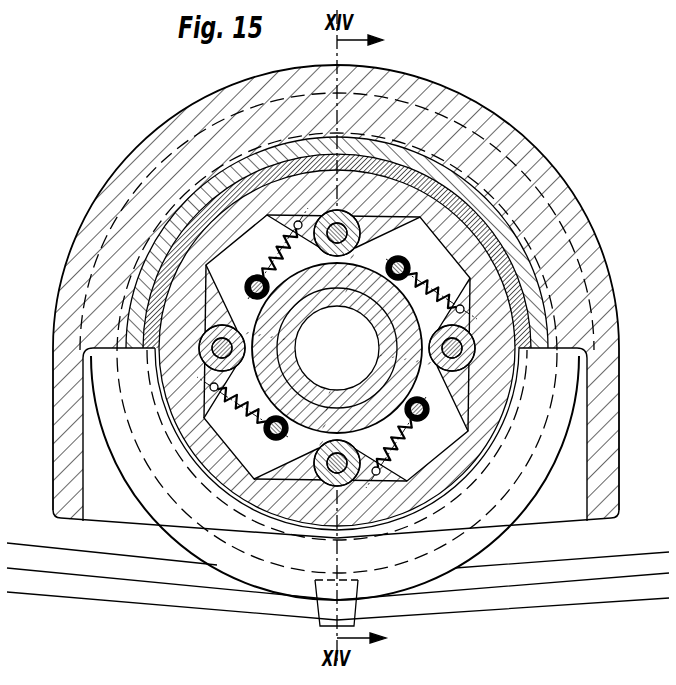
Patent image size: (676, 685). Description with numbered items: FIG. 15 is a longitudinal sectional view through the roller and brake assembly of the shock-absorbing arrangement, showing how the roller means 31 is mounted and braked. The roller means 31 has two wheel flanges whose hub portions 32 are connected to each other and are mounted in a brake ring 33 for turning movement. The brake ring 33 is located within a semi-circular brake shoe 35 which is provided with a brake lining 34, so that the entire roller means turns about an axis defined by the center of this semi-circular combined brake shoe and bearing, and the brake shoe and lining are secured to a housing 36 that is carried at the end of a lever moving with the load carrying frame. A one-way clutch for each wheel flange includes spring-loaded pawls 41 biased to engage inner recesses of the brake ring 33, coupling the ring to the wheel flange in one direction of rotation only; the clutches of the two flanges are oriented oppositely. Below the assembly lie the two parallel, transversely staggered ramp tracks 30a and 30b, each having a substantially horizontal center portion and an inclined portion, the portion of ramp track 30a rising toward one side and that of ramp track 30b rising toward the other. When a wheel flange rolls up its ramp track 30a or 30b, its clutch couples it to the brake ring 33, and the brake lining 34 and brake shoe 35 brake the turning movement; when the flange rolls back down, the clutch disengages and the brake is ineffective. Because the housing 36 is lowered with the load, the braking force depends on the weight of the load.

The housing 36 is at (258, 121).
The brake shoe 35 is at (300, 146).
The brake lining 34 is at (427, 180).
The brake ring 33 is at (487, 213).
The hub portions 32 is at (452, 240).
The roller means 31 is at (527, 426).
The spring-loaded pawls 41 is at (221, 303).
The ramp track 30a is at (566, 572).
The ramp track 30b is at (130, 570).